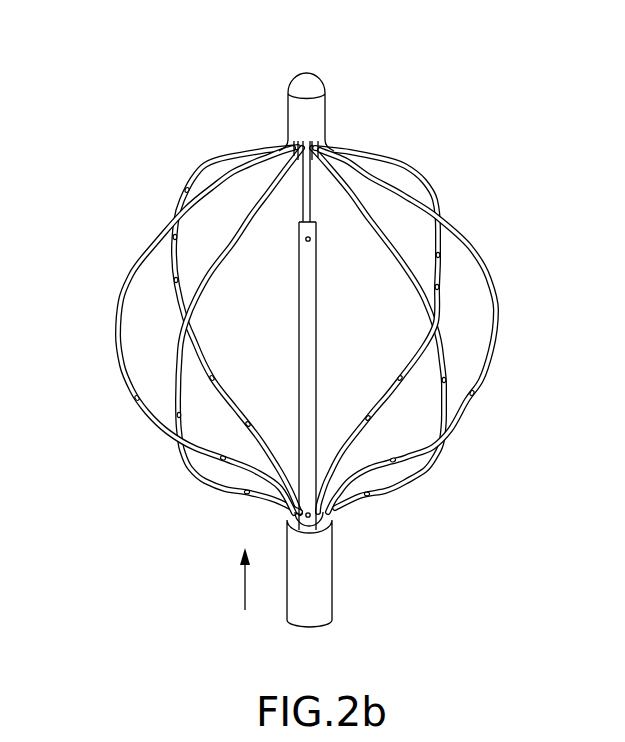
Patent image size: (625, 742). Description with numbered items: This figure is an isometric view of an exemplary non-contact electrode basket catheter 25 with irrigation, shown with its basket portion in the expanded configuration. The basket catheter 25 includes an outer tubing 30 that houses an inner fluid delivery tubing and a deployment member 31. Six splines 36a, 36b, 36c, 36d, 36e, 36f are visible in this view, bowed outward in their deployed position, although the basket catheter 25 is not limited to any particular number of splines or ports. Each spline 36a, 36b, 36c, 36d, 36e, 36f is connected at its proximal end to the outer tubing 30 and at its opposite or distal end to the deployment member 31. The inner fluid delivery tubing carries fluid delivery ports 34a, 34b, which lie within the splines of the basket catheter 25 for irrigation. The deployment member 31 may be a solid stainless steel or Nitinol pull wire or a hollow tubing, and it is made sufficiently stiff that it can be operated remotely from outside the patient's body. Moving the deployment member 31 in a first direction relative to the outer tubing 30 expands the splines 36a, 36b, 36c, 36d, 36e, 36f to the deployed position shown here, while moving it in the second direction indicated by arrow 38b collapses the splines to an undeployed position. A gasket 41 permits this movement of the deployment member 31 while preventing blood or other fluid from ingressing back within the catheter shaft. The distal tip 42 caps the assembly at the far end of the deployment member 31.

The basket catheter 25 is at (398, 73).
The outer tubing 30 is at (333, 583).
The deployment member 31 is at (299, 201).
The fluid delivery port 34a is at (310, 239).
The fluid delivery port 34b is at (308, 510).
The spline 36a is at (190, 467).
The spline 36b is at (440, 453).
The spline 36c is at (498, 298).
The spline 36d is at (438, 194).
The spline 36e is at (200, 170).
The spline 36f is at (118, 323).
The arrow 38b is at (244, 585).
The gasket 41 is at (301, 223).
The distal tip 42 is at (315, 72).